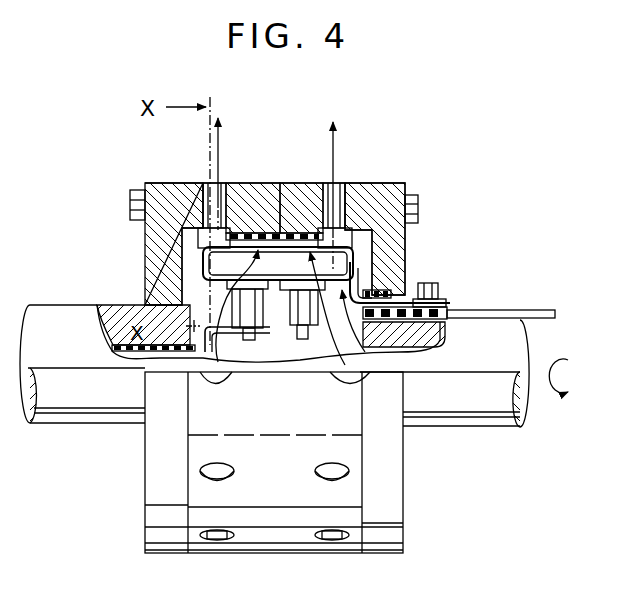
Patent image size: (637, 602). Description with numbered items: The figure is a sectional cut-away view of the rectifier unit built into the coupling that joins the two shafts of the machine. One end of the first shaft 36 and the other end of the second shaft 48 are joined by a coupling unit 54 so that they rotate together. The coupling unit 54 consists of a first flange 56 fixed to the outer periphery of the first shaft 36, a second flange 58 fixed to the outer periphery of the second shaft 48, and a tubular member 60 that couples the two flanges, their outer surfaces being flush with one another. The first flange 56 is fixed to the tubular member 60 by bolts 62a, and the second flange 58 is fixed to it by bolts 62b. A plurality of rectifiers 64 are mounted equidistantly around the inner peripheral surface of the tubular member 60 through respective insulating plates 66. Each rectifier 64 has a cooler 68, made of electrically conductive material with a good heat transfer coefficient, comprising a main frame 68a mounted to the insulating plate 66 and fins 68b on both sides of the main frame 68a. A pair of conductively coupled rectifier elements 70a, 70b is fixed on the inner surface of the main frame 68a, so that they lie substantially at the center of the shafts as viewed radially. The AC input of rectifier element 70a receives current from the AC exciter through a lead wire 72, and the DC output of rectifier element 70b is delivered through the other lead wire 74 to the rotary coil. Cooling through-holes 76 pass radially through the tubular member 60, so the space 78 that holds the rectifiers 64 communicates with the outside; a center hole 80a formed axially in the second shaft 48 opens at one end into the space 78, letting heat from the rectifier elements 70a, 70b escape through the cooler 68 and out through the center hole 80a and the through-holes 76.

The first shaft 36 is at (87, 425).
The second shaft 48 is at (462, 430).
The coupling unit 54 is at (404, 182).
The first flange 56 is at (145, 243).
The second flange 58 is at (406, 230).
The tubular member 60 is at (293, 183).
The bolts 62a is at (138, 202).
The bolts 62b is at (420, 205).
The rectifiers 64 is at (244, 215).
The insulating plates 66 is at (308, 215).
The cooler 68 is at (235, 262).
The main frame 68a is at (373, 287).
The fins 68b is at (210, 261).
The rectifier element 70a is at (303, 342).
The rectifier element 70b is at (256, 342).
The lead wire 72 is at (405, 290).
The lead wire 74 is at (216, 358).
The cooling through-holes 76 is at (207, 200).
The space 78 is at (368, 358).
The center hole 80a is at (435, 352).